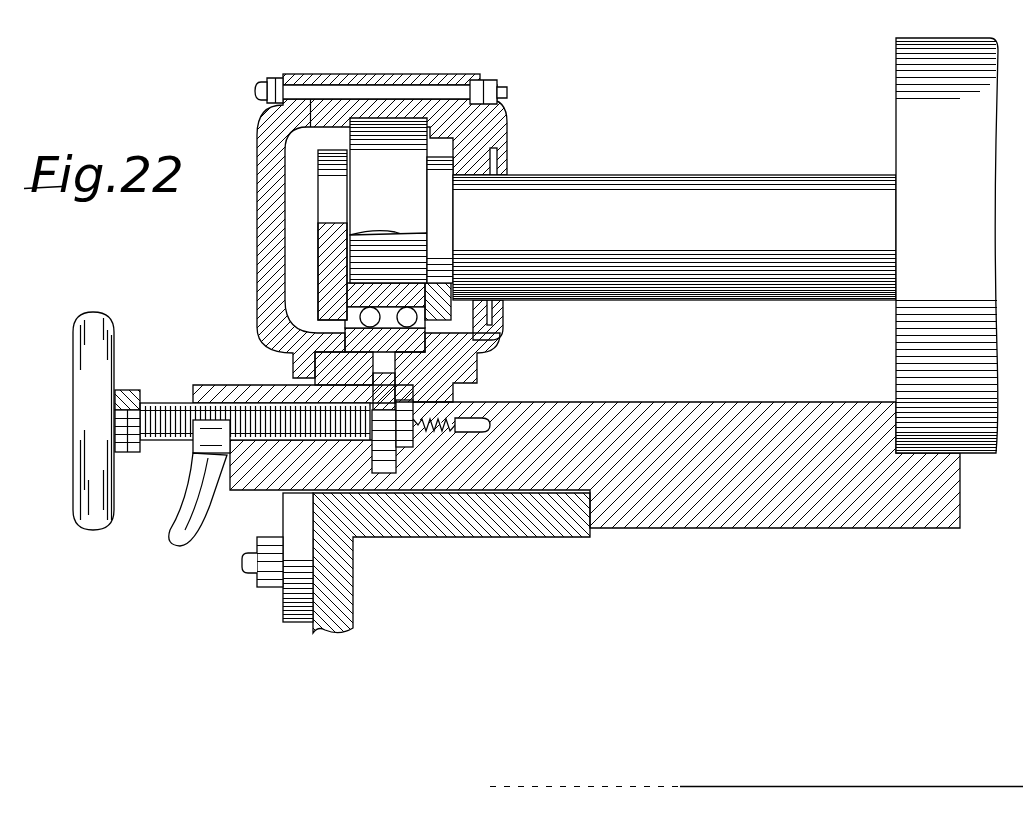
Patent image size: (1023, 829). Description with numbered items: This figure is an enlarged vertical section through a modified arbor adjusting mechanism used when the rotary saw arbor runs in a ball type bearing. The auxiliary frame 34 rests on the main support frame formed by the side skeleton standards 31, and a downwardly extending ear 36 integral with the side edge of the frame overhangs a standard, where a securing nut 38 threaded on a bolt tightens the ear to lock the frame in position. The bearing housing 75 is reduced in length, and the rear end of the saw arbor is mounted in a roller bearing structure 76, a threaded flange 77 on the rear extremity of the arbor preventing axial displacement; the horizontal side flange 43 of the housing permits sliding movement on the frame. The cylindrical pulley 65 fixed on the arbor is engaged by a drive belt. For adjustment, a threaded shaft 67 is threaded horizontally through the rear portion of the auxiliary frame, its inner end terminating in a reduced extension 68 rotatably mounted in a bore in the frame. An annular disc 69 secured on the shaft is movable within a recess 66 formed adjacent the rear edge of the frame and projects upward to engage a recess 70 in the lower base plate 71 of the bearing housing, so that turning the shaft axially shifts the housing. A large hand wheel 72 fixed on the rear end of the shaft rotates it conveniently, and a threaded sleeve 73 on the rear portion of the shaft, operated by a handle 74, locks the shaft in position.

The side skeleton standard 31 is at (530, 523).
The auxiliary frame 34 is at (632, 425).
The ear 36 is at (303, 580).
The securing nut 38 is at (263, 553).
The horizontal side flange 43 is at (667, 205).
The cylindrical pulley 65 is at (917, 138).
The recess 66 is at (448, 420).
The threaded shaft 67 is at (166, 404).
The reduced extension 68 is at (473, 417).
The annular disc 69 is at (383, 473).
The recess 70 is at (315, 386).
The lower base plate 71 is at (455, 357).
The hand wheel 72 is at (87, 353).
The threaded sleeve 73 is at (193, 455).
The handle 74 is at (187, 512).
The bearing housing 75 is at (262, 140).
The roller bearing structure 76 is at (393, 178).
The threaded flange 77 is at (330, 197).